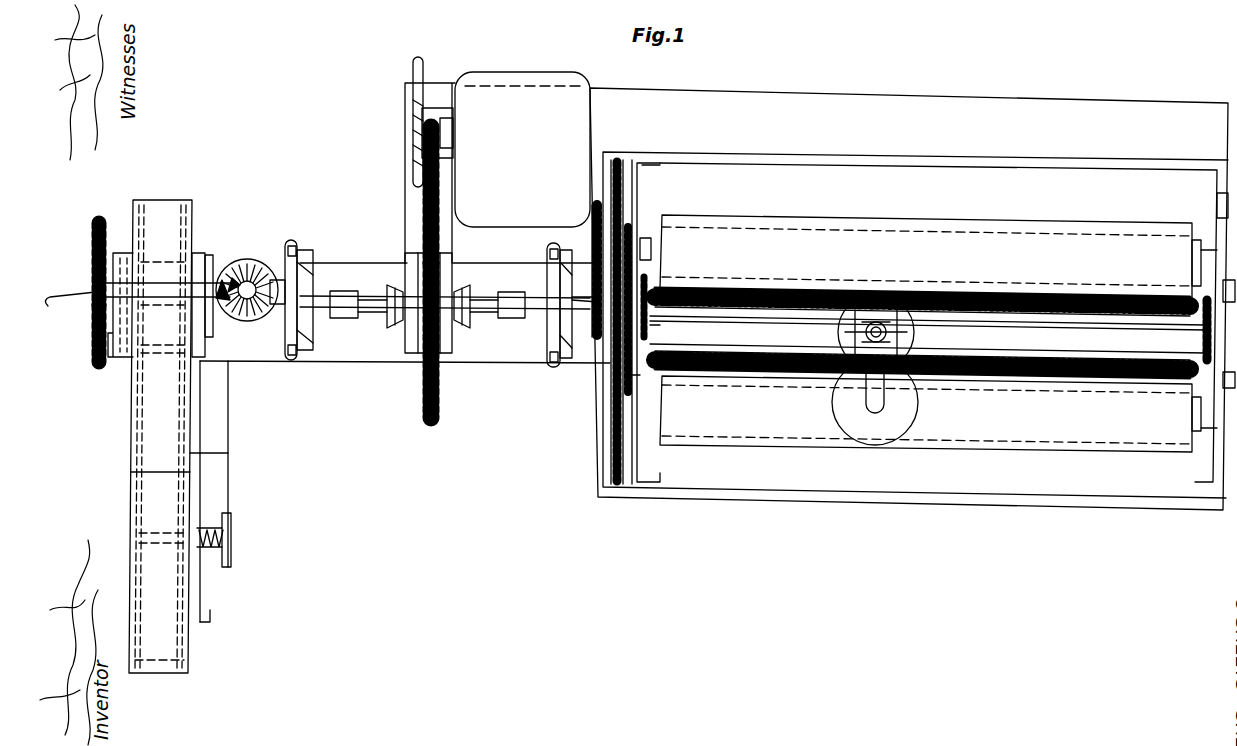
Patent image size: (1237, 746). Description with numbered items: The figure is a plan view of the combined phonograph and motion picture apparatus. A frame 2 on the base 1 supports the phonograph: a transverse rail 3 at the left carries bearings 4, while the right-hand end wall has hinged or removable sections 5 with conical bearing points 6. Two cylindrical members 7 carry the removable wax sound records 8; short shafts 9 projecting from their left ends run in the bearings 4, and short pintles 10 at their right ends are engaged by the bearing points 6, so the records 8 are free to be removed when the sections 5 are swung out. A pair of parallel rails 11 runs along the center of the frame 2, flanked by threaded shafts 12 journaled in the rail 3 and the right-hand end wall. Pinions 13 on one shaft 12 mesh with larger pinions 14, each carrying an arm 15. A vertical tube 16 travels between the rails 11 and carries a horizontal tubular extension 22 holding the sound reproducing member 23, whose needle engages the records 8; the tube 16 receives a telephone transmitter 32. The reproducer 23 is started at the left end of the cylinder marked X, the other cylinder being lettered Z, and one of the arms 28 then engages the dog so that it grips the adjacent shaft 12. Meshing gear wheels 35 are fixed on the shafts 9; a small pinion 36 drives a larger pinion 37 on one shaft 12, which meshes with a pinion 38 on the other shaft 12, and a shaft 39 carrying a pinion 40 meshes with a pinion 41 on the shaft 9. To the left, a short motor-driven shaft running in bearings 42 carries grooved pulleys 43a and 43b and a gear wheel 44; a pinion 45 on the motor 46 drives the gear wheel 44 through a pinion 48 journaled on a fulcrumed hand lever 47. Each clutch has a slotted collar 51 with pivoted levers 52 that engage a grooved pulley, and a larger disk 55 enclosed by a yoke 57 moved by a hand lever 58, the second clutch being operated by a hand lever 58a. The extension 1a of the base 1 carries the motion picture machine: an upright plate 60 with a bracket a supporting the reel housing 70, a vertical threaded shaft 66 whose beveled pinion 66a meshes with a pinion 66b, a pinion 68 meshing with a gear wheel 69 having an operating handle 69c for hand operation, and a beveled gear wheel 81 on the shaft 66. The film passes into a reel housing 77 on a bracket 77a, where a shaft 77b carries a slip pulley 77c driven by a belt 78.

The base 1 is at (1034, 94).
The extension 1a is at (332, 368).
The frame 2 is at (814, 156).
The transverse rail 3 is at (645, 165).
The bearings 4 is at (640, 238).
The hinged or removable sections 5 is at (345, 152).
The conical bearing points 6 is at (878, 585).
The cylindrical members 7 is at (656, 230).
The sound records 8 is at (956, 236).
The short shafts 9 is at (646, 277).
The short pintles 10 is at (1205, 252).
The longitudinally extending rails 11 is at (1045, 325).
The threaded shafts 12 is at (767, 289).
The pinions 13 is at (648, 290).
The larger pinions 14 is at (1205, 342).
The arm 15 is at (652, 333).
The vertically disposed tube 16 is at (940, 333).
The horizontal tubular extension 22 is at (883, 425).
The sound reproducing member 23 is at (846, 410).
The arm 28 is at (802, 334).
The telephone transmitter 32 is at (875, 298).
The meshing gear wheels 35 is at (617, 160).
The small pinion 36 is at (614, 214).
The larger pinion 37 is at (587, 283).
The pinion 38 is at (628, 378).
The shaft 39 is at (592, 338).
The pinion 40 is at (588, 310).
The pinion 41 is at (594, 232).
The bearings 42 is at (408, 263).
The grooved pulley 43a is at (390, 290).
The grooved pulley 43b is at (465, 290).
The gear wheel 44 is at (425, 216).
The pinion 45 is at (432, 130).
The motor 46 is at (522, 149).
The fulcrumed hand lever 47 is at (412, 70).
The pinion 48 is at (440, 170).
The slotted collar 51 is at (425, 316).
The levers 52 is at (372, 320).
The larger disk 55 is at (292, 245).
The yoke 57 is at (306, 250).
The hand lever 58 is at (316, 300).
The hand lever 58a is at (548, 290).
The upright plate 60 is at (195, 262).
The vertically disposed threaded shaft 66 is at (257, 262).
The beveled pinion 66a is at (248, 319).
The pinion 66b is at (240, 262).
The pinion 68 is at (90, 271).
The gear wheel 69 is at (90, 353).
The operating handle 69c is at (67, 317).
The reel housing 70 is at (163, 202).
The reel housing 77 is at (165, 645).
The bracket 77a is at (229, 453).
The shaft 77b is at (212, 565).
The slip pulley 77c is at (232, 521).
The belt 78 is at (229, 487).
The beveled gear wheel 81 is at (214, 491).
The bracket a is at (170, 221).
The record cylinder X is at (996, 421).
The axis Z is at (928, 251).